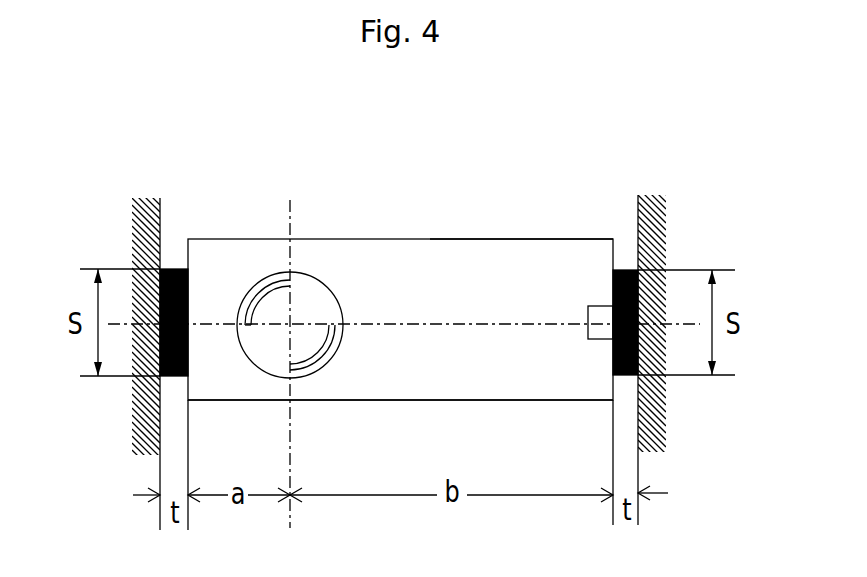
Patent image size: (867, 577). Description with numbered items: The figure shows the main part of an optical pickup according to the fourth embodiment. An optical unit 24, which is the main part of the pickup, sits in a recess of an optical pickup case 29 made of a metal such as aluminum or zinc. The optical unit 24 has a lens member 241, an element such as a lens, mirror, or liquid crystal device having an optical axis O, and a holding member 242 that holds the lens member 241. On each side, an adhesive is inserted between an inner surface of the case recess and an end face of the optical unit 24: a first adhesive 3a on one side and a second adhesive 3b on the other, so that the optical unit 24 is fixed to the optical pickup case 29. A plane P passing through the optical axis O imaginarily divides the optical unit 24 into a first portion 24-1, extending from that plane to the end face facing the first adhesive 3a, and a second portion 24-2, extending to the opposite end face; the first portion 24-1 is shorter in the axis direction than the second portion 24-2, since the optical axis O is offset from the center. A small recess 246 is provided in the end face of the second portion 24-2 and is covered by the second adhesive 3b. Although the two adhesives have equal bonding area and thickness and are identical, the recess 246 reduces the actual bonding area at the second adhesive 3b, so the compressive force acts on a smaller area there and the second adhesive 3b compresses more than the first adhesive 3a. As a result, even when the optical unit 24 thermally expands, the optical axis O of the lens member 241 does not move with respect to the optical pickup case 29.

The optical unit 24 is at (183, 137).
The optical pickup case 29 is at (147, 200).
The lens member 241 is at (337, 300).
The holding member 242 is at (505, 243).
The recess 246 is at (598, 306).
The first adhesive 3a is at (170, 376).
The second adhesive 3b is at (626, 376).
The first portion 24-1 is at (236, 401).
The second portion 24-2 is at (516, 400).
The optical axis O is at (291, 324).
The plane p-p P is at (289, 362).